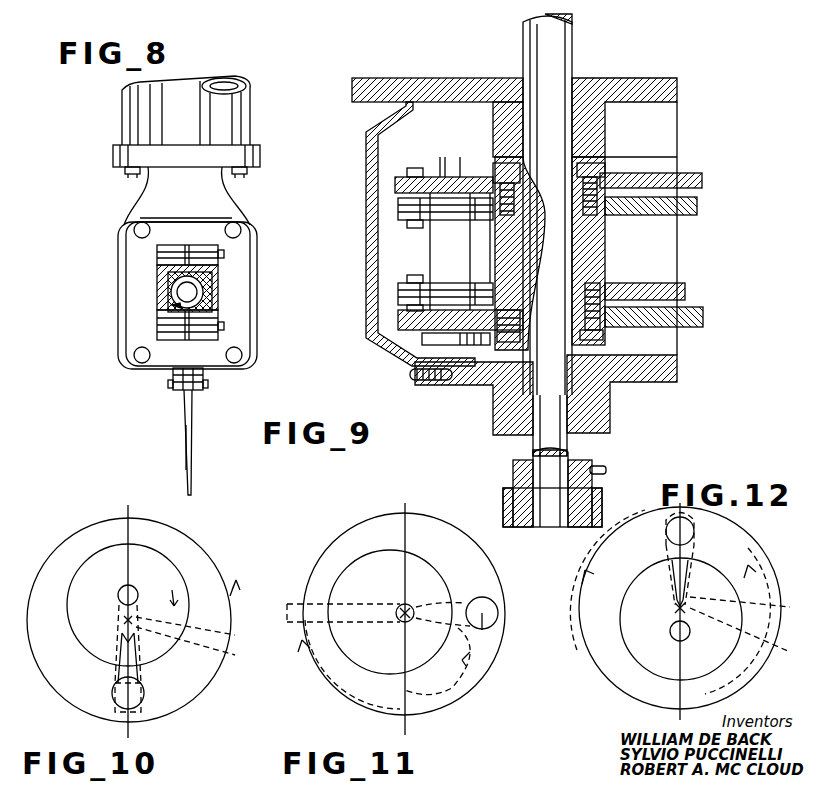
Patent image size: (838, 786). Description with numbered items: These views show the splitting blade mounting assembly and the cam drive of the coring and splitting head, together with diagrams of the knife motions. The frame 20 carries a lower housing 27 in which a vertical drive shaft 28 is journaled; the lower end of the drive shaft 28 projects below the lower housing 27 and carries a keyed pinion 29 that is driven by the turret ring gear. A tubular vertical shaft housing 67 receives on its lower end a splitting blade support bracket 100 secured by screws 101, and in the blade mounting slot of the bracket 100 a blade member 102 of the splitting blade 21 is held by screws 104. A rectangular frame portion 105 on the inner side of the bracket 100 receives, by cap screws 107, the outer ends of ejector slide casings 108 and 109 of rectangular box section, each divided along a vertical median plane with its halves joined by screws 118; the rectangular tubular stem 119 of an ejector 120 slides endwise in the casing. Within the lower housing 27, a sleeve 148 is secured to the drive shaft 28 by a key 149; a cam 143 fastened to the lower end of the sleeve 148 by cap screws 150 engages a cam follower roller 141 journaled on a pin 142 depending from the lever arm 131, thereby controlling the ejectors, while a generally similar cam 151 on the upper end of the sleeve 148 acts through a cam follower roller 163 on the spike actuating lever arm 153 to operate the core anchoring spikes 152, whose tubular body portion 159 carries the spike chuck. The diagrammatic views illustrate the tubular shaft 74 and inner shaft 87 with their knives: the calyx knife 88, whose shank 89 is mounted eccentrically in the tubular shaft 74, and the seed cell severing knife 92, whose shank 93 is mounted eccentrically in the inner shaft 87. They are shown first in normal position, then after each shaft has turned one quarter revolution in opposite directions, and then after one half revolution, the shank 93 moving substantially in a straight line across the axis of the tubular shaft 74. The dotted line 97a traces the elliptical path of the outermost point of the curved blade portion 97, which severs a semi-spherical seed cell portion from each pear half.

In FIG. 9, the frame 20 is at (355, 88).
In FIG. 8, the splitting blade 21 is at (184, 431).
In FIG. 9, the lower housing 27 is at (364, 150).
In FIG. 9, the vertical drive shaft 28 is at (530, 40).
In FIG. 9, the pinion 29 is at (500, 488).
In FIG. 8, the tubular vertical shaft housing 67 is at (130, 110).
In FIG. 10, the tubular shaft 74 is at (100, 530).
In FIG. 11, the tubular shaft 74 is at (370, 532).
In FIG. 12, the tubular shaft 74 is at (630, 569).
In FIG. 10, the inner shaft 87 is at (100, 560).
In FIG. 11, the inner shaft 87 is at (365, 573).
In FIG. 12, the inner shaft 87 is at (656, 626).
In FIG. 10, the calyx knife 88 is at (142, 683).
In FIG. 11, the calyx knife 88 is at (462, 636).
In FIG. 12, the calyx knife 88 is at (692, 537).
In FIG. 10, the shank 89 is at (143, 702).
In FIG. 11, the shank 89 is at (482, 597).
In FIG. 12, the shank 89 is at (692, 525).
In FIG. 10, the seed cell severing knife 92 is at (200, 618).
In FIG. 11, the seed cell severing knife 92 is at (320, 604).
In FIG. 12, the seed cell severing knife 92 is at (747, 621).
In FIG. 10, the shank 93 is at (135, 590).
In FIG. 11, the shank 93 is at (414, 606).
In FIG. 12, the shank 93 is at (688, 637).
In FIG. 10, the blade portion 97 is at (232, 586).
In FIG. 11, the blade portion 97 is at (290, 604).
In FIG. 12, the blade portion 97 is at (747, 606).
In FIG. 11, the dotted line 97a is at (312, 670).
In FIG. 12, the dotted line 97a is at (580, 660).
In FIG. 8, the splitting blade support bracket 100 is at (160, 193).
In FIG. 8, the screws 101 is at (128, 172).
In FIG. 8, the blade member 102 is at (186, 446).
In FIG. 8, the screws 104 is at (205, 388).
In FIG. 8, the rectangular frame portion 105 is at (120, 252).
In FIG. 8, the cap screws 107 is at (138, 228).
In FIG. 8, the ejector slide casing 108 is at (160, 270).
In FIG. 8, the ejector slide casing 109 is at (205, 284).
In FIG. 8, the screws 118 is at (222, 254).
In FIG. 8, the rectangular tubular stem 119 is at (178, 292).
In FIG. 8, the ejector 120 is at (182, 306).
In FIG. 9, the lever arm 131 is at (686, 290).
In FIG. 9, the cam follower roller 141 is at (400, 307).
In FIG. 9, the pin 142 is at (400, 283).
In FIG. 9, the cam 143 is at (704, 318).
In FIG. 9, the sleeve 148 is at (612, 253).
In FIG. 9, the key 149 is at (522, 260).
In FIG. 9, the cap screws 150 is at (510, 342).
In FIG. 9, the cam 151 is at (704, 180).
In FIG. 8, the core anchoring spikes 152 is at (208, 294).
In FIG. 9, the spike actuating lever arm 153 is at (698, 210).
In FIG. 8, the tubular body portion 159 is at (212, 292).
In FIG. 9, the cam follower roller 163 is at (400, 178).